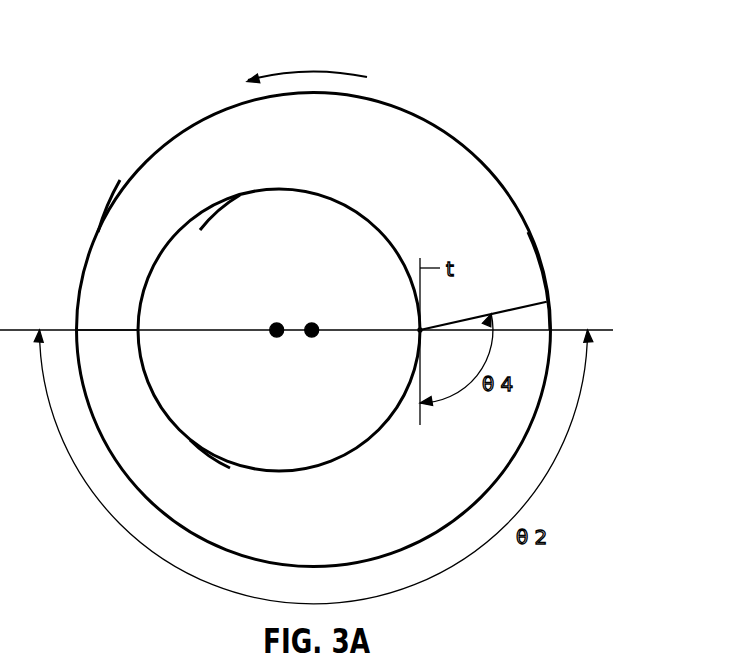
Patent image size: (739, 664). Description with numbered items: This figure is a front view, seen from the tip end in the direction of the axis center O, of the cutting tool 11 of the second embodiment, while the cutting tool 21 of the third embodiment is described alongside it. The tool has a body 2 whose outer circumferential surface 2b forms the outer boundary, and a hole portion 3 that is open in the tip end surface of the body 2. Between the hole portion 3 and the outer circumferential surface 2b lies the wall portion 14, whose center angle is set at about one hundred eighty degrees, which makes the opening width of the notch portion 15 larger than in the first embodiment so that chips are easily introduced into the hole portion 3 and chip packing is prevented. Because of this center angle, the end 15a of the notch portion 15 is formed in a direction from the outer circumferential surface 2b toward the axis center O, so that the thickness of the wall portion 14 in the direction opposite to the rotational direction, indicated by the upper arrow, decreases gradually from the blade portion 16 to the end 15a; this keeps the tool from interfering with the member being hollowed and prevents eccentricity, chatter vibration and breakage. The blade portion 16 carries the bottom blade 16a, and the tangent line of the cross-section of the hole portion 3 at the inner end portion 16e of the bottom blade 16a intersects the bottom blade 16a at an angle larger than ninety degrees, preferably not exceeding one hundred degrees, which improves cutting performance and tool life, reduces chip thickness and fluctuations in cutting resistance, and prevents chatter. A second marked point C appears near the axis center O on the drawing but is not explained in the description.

The body 2 is at (423, 101).
The outer circumferential surface 2b is at (98, 230).
The hole portion 3 is at (281, 470).
The cutting tool 11 is at (566, 119).
The wall portion 14 is at (193, 457).
The notch portion 15 is at (228, 185).
The end of notch portion 15a is at (97, 330).
The blade portion 16 is at (541, 232).
The bottom blade 16a is at (520, 305).
The inner end portion 16e is at (420, 330).
The center of lens C is at (280, 325).
The axis center O is at (315, 325).
The cutting tool 21 is at (625, 653).